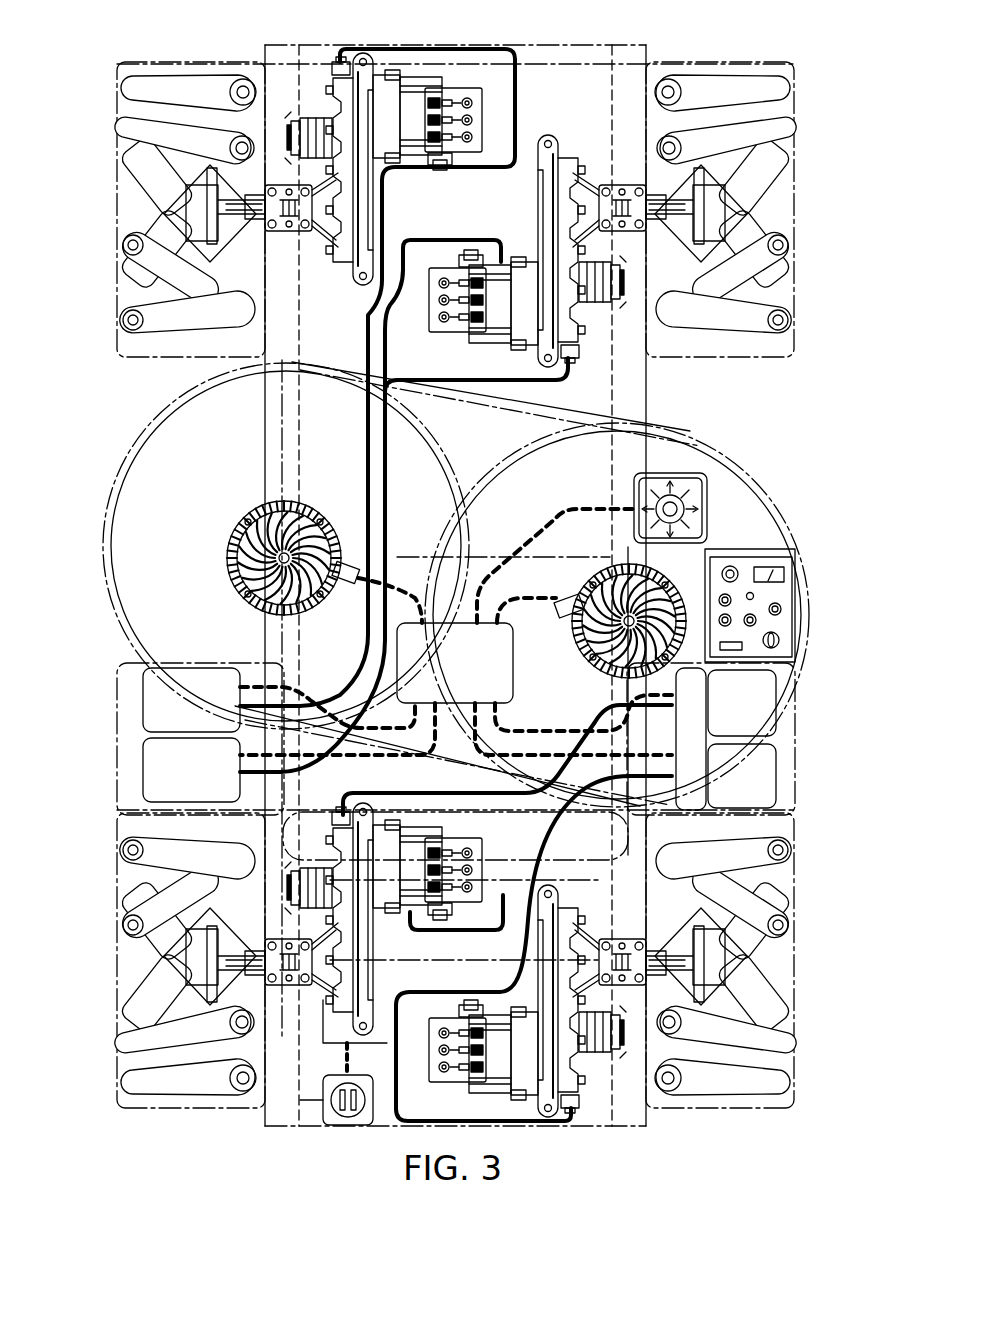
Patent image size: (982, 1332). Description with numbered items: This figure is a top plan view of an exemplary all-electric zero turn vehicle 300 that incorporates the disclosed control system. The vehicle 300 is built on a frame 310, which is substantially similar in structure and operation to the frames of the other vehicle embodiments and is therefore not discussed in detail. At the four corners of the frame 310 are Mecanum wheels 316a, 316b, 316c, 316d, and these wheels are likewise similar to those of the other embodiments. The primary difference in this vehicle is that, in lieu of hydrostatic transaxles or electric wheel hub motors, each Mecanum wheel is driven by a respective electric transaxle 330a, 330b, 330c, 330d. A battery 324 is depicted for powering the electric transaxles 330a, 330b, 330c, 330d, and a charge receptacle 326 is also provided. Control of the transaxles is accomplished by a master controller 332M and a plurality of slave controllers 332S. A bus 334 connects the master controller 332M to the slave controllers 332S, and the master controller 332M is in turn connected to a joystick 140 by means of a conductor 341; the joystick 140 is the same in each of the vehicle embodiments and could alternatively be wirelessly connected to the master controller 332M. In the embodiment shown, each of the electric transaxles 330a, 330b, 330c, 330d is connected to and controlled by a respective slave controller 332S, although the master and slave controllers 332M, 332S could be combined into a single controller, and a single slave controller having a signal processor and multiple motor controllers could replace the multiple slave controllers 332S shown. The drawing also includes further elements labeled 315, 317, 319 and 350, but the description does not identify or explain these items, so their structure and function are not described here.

The all-electric zero turn vehicle 300 is at (96, 67).
The frame 310 is at (633, 1127).
The fan 315 is at (412, 557).
The Mecanum wheel 316a is at (138, 170).
The Mecanum wheel 316b is at (773, 170).
The Mecanum wheel 316c is at (140, 1003).
The Mecanum wheel 316d is at (770, 1004).
The outer turning circle 317 is at (143, 434).
The wheel circle 319 is at (180, 405).
The battery 324 is at (323, 1025).
The charge receptacle 326 is at (330, 1120).
The electric transaxle 330a is at (318, 234).
The electric transaxle 330b is at (583, 188).
The electric transaxle 330c is at (316, 836).
The electric transaxle 330d is at (587, 1082).
The master controller 332M is at (467, 698).
The slave controller 332S is at (207, 731).
The bus 334 is at (541, 730).
The conductor 341 is at (600, 504).
The joystick 140 is at (677, 477).
The control panel 350 is at (744, 560).